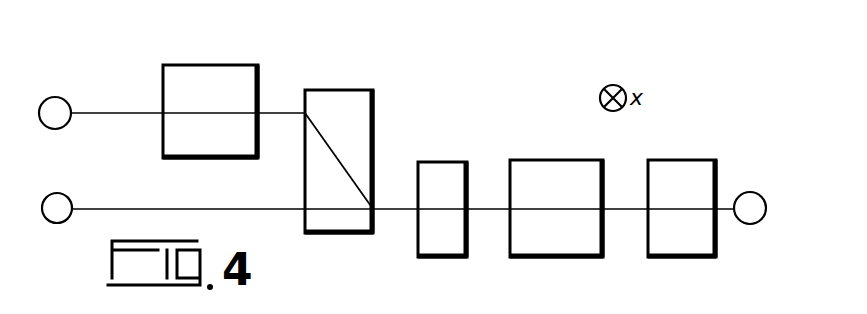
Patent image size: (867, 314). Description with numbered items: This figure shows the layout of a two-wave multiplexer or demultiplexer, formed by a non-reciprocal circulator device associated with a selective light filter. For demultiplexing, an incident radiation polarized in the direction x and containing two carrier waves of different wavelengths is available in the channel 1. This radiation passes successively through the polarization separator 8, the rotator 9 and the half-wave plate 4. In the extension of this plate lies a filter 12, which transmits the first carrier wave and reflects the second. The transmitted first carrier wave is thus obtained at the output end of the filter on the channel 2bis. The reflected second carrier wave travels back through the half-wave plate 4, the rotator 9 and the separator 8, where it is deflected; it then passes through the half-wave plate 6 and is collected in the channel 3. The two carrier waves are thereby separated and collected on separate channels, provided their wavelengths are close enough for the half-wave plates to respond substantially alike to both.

The channel 3 is at (55, 113).
The channel 1 is at (57, 208).
The channel 2 bis 2bis is at (757, 208).
The half-wave plate 6 is at (163, 146).
The polarization separator 8 is at (407, 66).
The rotator 9 is at (476, 93).
The half-wave plate 4 is at (595, 58).
The filter 12 is at (665, 160).